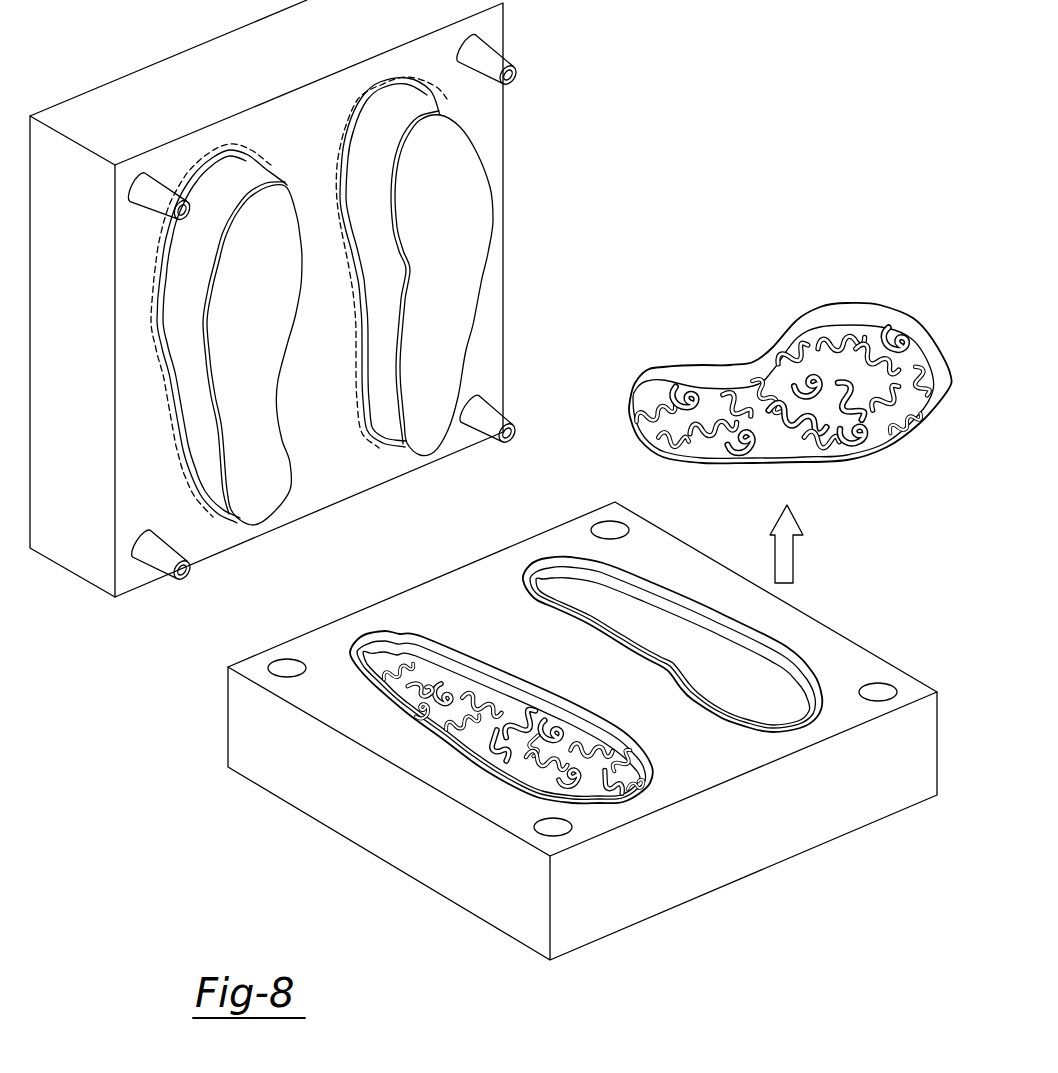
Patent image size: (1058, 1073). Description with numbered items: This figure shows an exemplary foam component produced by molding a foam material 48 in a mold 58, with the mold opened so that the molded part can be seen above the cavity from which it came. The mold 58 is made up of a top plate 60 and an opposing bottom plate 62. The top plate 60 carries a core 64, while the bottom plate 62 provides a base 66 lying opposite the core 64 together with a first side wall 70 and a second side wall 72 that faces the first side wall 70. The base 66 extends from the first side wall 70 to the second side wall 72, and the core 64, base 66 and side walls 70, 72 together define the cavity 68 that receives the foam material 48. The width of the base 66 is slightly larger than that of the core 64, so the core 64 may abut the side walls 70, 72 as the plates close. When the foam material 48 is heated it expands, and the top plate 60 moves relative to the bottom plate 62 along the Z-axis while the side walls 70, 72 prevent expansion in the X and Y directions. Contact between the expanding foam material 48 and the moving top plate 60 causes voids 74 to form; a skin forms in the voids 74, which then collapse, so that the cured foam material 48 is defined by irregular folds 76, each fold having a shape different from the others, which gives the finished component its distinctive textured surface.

The foam material 48 is at (483, 730).
The mold 58 is at (491, 480).
The top plate 60 is at (312, 322).
The bottom plate 62 is at (582, 644).
The core 64 is at (272, 353).
The base 66 is at (507, 730).
The cavity 68 is at (433, 700).
The first side wall 70 is at (567, 800).
The second side wall 72 is at (550, 733).
The voids 74 is at (370, 667).
The irregular folds 76 is at (393, 663).